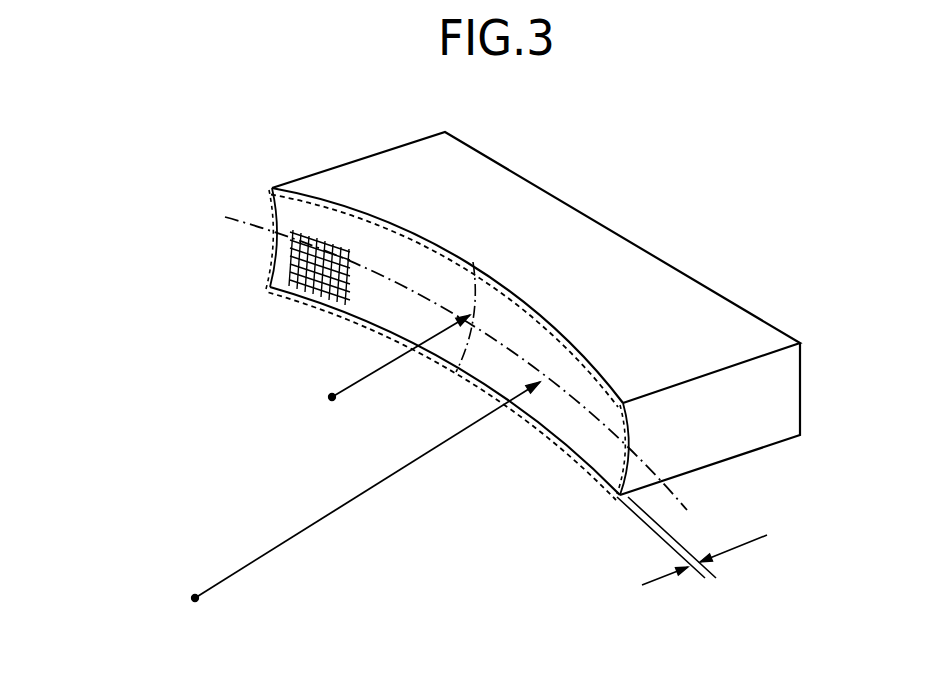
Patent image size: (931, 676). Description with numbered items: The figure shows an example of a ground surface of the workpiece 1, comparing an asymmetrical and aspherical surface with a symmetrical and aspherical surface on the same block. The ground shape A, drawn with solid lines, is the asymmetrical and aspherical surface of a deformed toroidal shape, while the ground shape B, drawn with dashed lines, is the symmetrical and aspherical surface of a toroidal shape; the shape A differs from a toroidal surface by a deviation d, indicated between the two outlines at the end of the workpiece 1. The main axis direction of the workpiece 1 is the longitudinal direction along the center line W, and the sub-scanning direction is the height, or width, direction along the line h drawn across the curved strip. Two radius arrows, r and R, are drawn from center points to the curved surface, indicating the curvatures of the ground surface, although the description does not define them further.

The workpiece 1 is at (625, 267).
The ground shape of asymmetrical and aspherical surface A is at (315, 198).
The ground shape of symmetrical and aspherical surface B is at (317, 306).
The line w–w' W is at (456, 366).
The line h–h' h is at (473, 262).
The radius r of inner curvature r is at (400, 358).
The radius R of outer curvature R is at (366, 492).
The deviation d is at (692, 541).